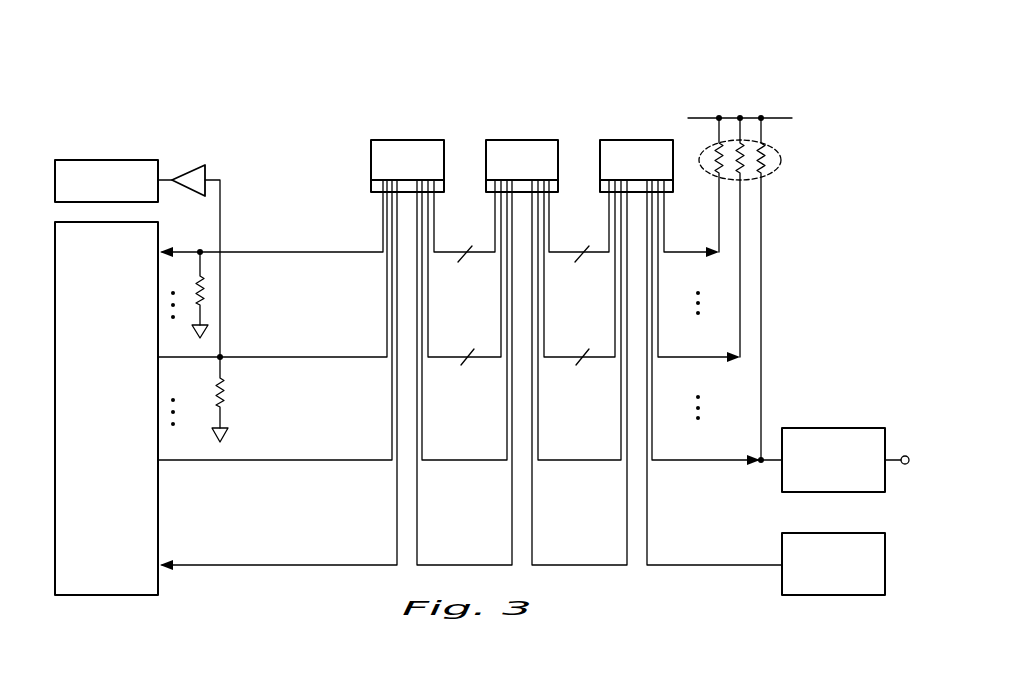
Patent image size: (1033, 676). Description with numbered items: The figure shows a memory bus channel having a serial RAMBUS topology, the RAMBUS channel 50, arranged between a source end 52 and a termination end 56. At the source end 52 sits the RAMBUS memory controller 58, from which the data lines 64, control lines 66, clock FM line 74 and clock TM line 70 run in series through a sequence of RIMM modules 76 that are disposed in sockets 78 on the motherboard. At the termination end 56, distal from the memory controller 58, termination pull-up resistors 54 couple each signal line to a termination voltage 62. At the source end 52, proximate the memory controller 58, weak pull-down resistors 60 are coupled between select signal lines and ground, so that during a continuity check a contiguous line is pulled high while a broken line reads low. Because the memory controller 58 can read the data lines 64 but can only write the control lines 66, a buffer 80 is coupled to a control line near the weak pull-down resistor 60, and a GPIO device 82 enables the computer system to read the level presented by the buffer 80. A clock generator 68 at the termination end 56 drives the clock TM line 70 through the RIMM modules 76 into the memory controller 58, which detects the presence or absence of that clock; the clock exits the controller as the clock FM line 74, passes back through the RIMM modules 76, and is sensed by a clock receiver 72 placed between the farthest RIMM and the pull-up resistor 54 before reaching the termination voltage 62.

The RAMBUS channel 50 is at (150, 68).
The source end 52 is at (260, 588).
The termination pull-up resistors 54 is at (780, 165).
The termination end 56 is at (677, 588).
The RAMBUS memory controller 58 is at (160, 586).
The weak pull-down resistors 60 is at (205, 292).
The termination voltage 62 is at (776, 118).
The data lines 64 is at (288, 252).
The control lines 66 is at (310, 357).
The clock generator 68 is at (782, 582).
The clock TM line 70 is at (303, 563).
The clock receiver 72 is at (832, 428).
The clock FM line 74 is at (244, 462).
The RIMM modules 76 is at (407, 140).
The sockets 78 is at (371, 184).
The buffer 80 is at (190, 166).
The GPIO device 82 is at (107, 160).